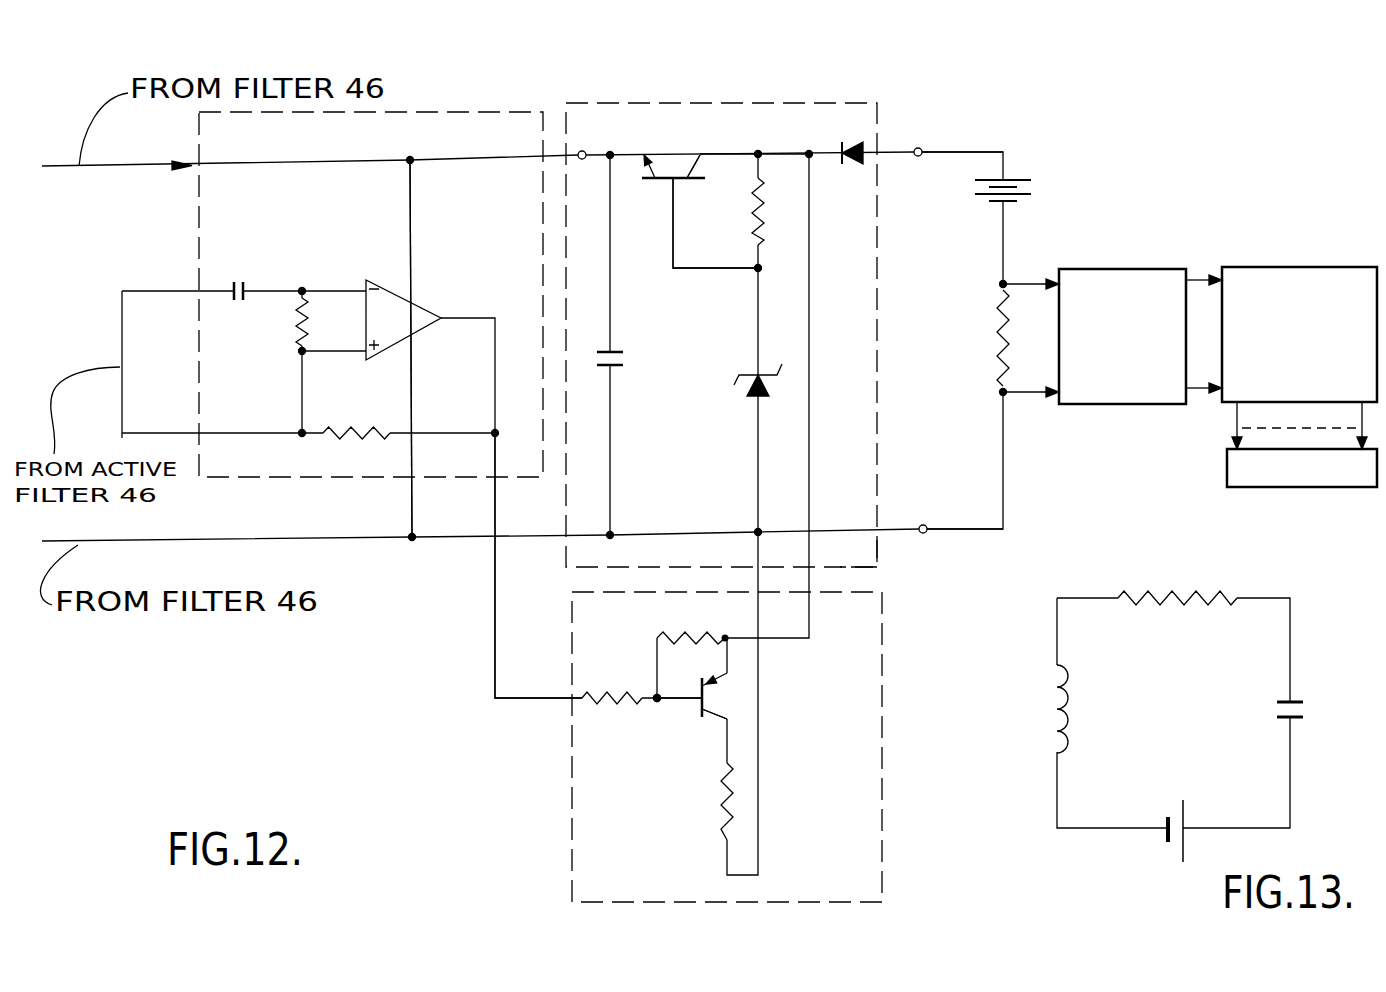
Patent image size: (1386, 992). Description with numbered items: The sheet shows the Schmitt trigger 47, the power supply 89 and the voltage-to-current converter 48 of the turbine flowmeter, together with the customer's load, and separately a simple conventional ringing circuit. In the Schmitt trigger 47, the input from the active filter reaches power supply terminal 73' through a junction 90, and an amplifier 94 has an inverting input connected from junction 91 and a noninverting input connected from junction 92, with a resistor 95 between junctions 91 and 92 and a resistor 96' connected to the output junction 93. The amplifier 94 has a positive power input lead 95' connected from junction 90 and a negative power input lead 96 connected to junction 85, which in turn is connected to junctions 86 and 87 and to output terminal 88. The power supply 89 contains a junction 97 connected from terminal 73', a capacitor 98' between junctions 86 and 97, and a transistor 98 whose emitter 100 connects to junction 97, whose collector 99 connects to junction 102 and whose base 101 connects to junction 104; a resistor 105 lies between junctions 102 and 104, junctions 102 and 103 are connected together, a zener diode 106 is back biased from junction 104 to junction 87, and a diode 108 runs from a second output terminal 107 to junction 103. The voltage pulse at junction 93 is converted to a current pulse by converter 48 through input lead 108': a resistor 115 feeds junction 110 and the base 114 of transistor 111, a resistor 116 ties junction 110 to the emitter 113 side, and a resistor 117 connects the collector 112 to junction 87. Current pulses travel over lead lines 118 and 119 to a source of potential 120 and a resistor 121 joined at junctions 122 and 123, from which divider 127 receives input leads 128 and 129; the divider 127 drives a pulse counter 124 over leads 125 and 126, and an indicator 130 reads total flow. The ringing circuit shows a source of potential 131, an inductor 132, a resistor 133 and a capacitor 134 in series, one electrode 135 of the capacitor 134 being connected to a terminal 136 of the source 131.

In FIG. 12, the Schmitt trigger circuit 47 is at (190, 226).
In FIG. 12, the current converter 48 is at (566, 851).
In FIG. 12, the power supply terminal 73' is at (585, 176).
In FIG. 12, the junction 85 is at (413, 540).
In FIG. 12, the junction 86 is at (613, 533).
In FIG. 12, the junction 87 is at (758, 530).
In FIG. 12, the output terminal 88 is at (925, 525).
In FIG. 12, the power supply 89 is at (886, 562).
In FIG. 12, the junction 90 is at (410, 160).
In FIG. 12, the junction 91 is at (312, 278).
In FIG. 12, the junction 92 is at (300, 353).
In FIG. 12, the junction 93 is at (492, 437).
In FIG. 12, the amplifier 94 is at (388, 362).
In FIG. 12, the resistor 95 is at (267, 325).
In FIG. 12, the positive power input lead 95' is at (435, 348).
In FIG. 12, the negative power input lead 96 is at (435, 348).
In FIG. 12, the resistor 96' is at (356, 450).
In FIG. 12, the junction 97 is at (610, 153).
In FIG. 12, the transistor 98 is at (721, 335).
In FIG. 12, the capacitor 98' is at (635, 371).
In FIG. 12, the collector 99 is at (702, 168).
In FIG. 12, the emitter 100 is at (652, 160).
In FIG. 12, the base 101 is at (672, 228).
In FIG. 12, the junction 102 is at (758, 152).
In FIG. 12, the junction 103 is at (809, 152).
In FIG. 12, the junction 104 is at (754, 272).
In FIG. 12, the resistor 105 is at (750, 236).
In FIG. 12, the zener diode 106 is at (740, 395).
In FIG. 12, the second output terminal 107 is at (918, 147).
In FIG. 12, the diode 108 is at (842, 179).
In FIG. 12, the input lead 108' is at (502, 565).
In FIG. 12, the junction 110 is at (656, 701).
In FIG. 12, the transistor 111 is at (701, 726).
In FIG. 12, the collector 112 is at (712, 712).
In FIG. 12, the emitter 113 is at (710, 681).
In FIG. 12, the base 114 is at (680, 699).
In FIG. 12, the resistor 115 is at (610, 690).
In FIG. 12, the resistor 116 is at (684, 633).
In FIG. 12, the resistor 117 is at (725, 823).
In FIG. 12, the lead line 118 is at (960, 152).
In FIG. 12, the lead line 119 is at (968, 530).
In FIG. 12, the source of potential 120 is at (982, 199).
In FIG. 12, the resistor 121 is at (999, 338).
In FIG. 12, the junction 122 is at (1000, 284).
In FIG. 12, the junction 123 is at (1000, 392).
In FIG. 12, the pulse counter 124 is at (1242, 267).
In FIG. 12, the input lead 125 is at (1200, 278).
In FIG. 12, the input lead 126 is at (1200, 396).
In FIG. 12, the divider 127 is at (1094, 268).
In FIG. 12, the input lead 128 is at (1024, 283).
In FIG. 12, the input lead 129 is at (1030, 395).
In FIG. 12, the indicator 130 is at (1233, 487).
In FIG. 13, the source of potential 131 is at (1185, 844).
In FIG. 13, the inductor 132 is at (1050, 734).
In FIG. 13, the resistor 133 is at (1168, 595).
In FIG. 13, the capacitor 134 is at (1300, 693).
In FIG. 13, the electrode 135 is at (1298, 721).
In FIG. 13, the terminal 136 is at (1185, 813).